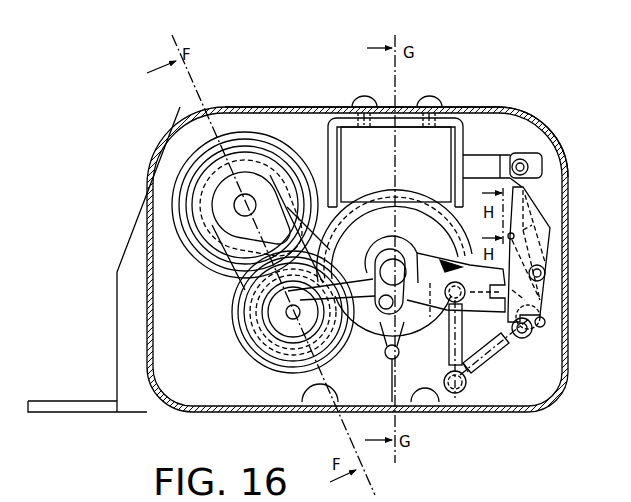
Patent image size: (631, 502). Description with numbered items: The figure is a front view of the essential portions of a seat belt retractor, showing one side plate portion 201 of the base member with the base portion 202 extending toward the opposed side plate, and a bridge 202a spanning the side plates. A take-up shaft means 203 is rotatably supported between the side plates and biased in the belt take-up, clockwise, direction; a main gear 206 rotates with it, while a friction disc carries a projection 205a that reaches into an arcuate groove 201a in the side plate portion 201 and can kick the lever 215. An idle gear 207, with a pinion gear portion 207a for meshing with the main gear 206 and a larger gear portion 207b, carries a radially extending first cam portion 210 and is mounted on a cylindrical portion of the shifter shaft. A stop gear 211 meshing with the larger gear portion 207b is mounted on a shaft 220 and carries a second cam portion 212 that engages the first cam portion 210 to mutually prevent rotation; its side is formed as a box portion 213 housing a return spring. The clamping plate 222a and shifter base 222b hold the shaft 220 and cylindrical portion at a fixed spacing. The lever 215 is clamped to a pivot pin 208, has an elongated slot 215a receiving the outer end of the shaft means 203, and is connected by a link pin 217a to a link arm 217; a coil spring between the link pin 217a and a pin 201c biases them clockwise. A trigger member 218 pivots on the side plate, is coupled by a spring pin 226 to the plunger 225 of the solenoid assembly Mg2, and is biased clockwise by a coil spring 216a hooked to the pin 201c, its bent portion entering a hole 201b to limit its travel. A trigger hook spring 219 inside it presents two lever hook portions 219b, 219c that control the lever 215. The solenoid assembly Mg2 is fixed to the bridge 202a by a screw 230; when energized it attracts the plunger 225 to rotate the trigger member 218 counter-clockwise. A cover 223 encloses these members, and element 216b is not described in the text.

The side plate portion 201 is at (193, 398).
The arcuate groove 201a is at (437, 387).
The hole 201b is at (545, 321).
The pin 201c is at (458, 407).
The base portion 202 is at (92, 414).
The bridge 202a is at (391, 105).
The take-up shaft means 203 is at (382, 258).
The projection 205a is at (390, 391).
The main gear 206 is at (368, 197).
The idle gear 207 is at (229, 318).
The pinion gear portion 207a is at (268, 350).
The larger gear portion 207b is at (280, 350).
The pivot pin 208 is at (255, 342).
The first cam portion 210 is at (338, 236).
The stop gear 211 is at (248, 155).
The second cam portion 212 is at (205, 187).
The box portion 213 is at (200, 160).
The lever 215 is at (310, 355).
The elongated slot 215a is at (387, 350).
The coil spring 216a is at (492, 352).
The link end 216b is at (468, 378).
The link arm 217 is at (423, 212).
The link pin 217a is at (442, 260).
The trigger member 218 is at (538, 213).
The trigger hook spring 219 is at (544, 268).
The lever hook portion 219b is at (515, 296).
The lever hook portion 219c is at (514, 237).
The shaft 220 is at (286, 163).
The clamping plate 222a is at (233, 270).
The shifter base 222b is at (242, 288).
The cover 223 is at (545, 124).
The plunger 225 is at (480, 158).
The spring pin 226 is at (527, 167).
The screw 230 is at (358, 100).
The solenoid assembly Mg2 is at (442, 128).